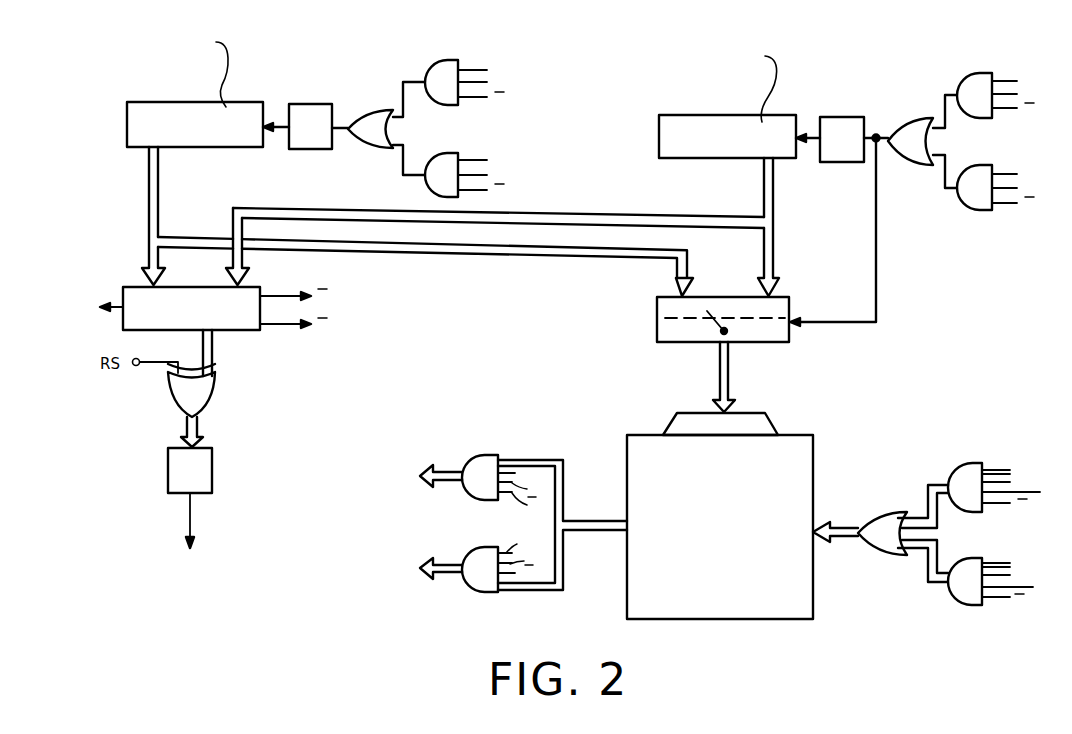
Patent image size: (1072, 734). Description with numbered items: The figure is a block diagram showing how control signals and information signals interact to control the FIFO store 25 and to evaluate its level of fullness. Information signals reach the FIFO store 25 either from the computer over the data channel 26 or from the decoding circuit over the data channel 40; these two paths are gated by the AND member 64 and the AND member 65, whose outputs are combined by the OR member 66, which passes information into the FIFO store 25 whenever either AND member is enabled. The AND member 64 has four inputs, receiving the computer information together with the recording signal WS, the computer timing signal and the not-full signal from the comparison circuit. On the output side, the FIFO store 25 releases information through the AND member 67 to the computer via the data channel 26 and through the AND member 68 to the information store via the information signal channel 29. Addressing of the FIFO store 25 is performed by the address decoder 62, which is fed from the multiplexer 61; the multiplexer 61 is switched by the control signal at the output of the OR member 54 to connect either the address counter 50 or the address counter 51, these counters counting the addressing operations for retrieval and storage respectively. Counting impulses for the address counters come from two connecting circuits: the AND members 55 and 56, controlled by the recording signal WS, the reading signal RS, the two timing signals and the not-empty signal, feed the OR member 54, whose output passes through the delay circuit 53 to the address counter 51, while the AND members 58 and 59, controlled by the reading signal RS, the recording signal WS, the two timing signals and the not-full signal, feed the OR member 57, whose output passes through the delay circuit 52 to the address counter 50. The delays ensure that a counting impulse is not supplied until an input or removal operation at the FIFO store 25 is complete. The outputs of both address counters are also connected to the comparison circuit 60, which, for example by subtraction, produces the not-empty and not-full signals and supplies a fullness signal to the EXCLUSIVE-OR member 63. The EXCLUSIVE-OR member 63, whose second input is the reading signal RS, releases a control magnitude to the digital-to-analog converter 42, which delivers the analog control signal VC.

The FIFO store 25 is at (803, 607).
The data channel 26 is at (998, 468).
The information signal channel 29 is at (441, 577).
The data channel 40 is at (997, 562).
The digital-to-analog converter 42 is at (213, 466).
The address counter 50 is at (201, 105).
The address counter 51 is at (725, 120).
The delay circuit 52 is at (312, 106).
The delay circuit 53 is at (839, 120).
The OR member 54 is at (905, 120).
The AND member 55 is at (973, 71).
The AND member 56 is at (977, 165).
The OR member 57 is at (368, 109).
The AND member 58 is at (440, 61).
The AND member 59 is at (441, 153).
The comparison circuit 60 is at (250, 291).
The multiplexer 61 is at (783, 301).
The address decoder 62 is at (750, 414).
The EXCLUSIVE-OR member 63 is at (203, 401).
The AND member 64 is at (966, 462).
The AND member 65 is at (957, 592).
The OR member 66 is at (878, 520).
The AND member 67 is at (488, 457).
The AND member 68 is at (480, 557).